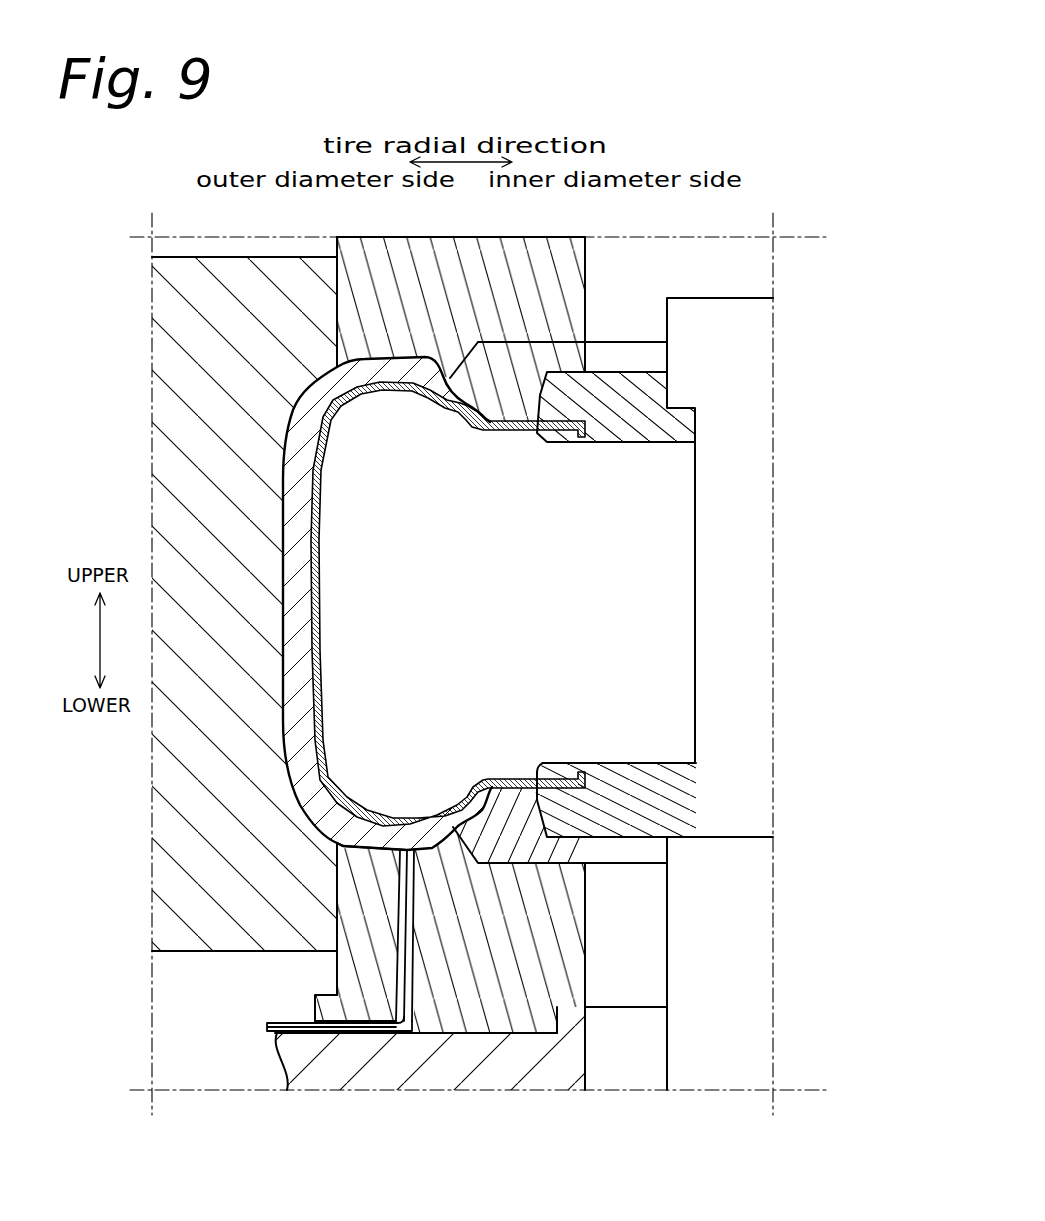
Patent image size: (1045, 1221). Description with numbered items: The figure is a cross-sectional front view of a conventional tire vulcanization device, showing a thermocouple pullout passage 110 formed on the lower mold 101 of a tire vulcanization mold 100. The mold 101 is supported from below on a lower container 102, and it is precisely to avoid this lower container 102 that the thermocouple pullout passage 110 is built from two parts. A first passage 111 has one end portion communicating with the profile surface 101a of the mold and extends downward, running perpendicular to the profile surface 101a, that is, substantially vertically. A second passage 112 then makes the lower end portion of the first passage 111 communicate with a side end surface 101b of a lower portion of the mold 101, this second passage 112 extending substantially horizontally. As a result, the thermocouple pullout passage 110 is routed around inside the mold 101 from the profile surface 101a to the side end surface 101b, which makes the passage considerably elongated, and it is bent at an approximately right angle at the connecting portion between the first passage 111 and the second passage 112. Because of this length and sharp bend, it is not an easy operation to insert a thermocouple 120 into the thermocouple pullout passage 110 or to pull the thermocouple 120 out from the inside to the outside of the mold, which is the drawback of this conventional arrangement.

The tire vulcanization mold 100 is at (618, 305).
The lower mold 101 is at (586, 943).
The profile surface 101a is at (397, 813).
The side end surface 101b is at (313, 1010).
The lower container 102 is at (527, 1083).
The thermocouple pullout passage 110 is at (433, 951).
The first passage 111 is at (417, 908).
The second passage 112 is at (362, 1036).
The thermocouple 120 is at (270, 1030).